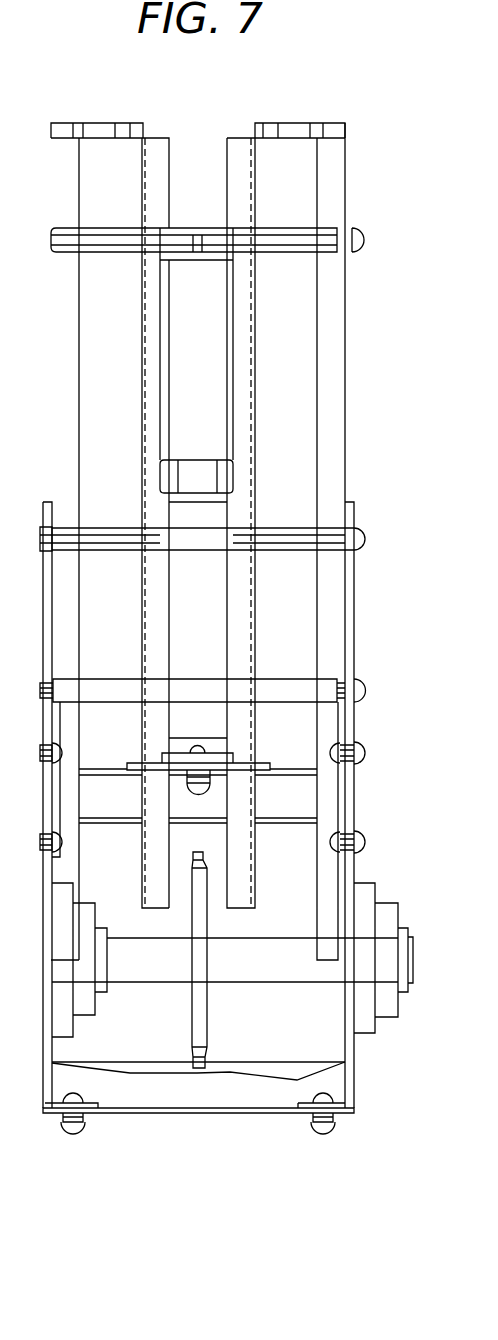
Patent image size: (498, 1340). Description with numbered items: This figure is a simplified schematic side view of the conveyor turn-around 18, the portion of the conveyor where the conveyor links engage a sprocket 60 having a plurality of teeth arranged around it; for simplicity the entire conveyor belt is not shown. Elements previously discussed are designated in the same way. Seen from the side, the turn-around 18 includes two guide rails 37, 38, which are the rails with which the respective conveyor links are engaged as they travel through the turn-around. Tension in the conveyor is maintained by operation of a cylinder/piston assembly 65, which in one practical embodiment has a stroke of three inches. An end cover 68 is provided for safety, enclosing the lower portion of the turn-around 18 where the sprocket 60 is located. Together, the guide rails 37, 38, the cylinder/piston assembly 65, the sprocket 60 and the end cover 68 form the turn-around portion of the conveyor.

The conveyor turn-around 18 is at (82, 73).
The guide rail 37 is at (238, 190).
The guide rail 38 is at (157, 195).
The cylinder/piston assembly 65 is at (208, 425).
The sprocket 60 is at (200, 1028).
The end cover 68 is at (130, 1113).